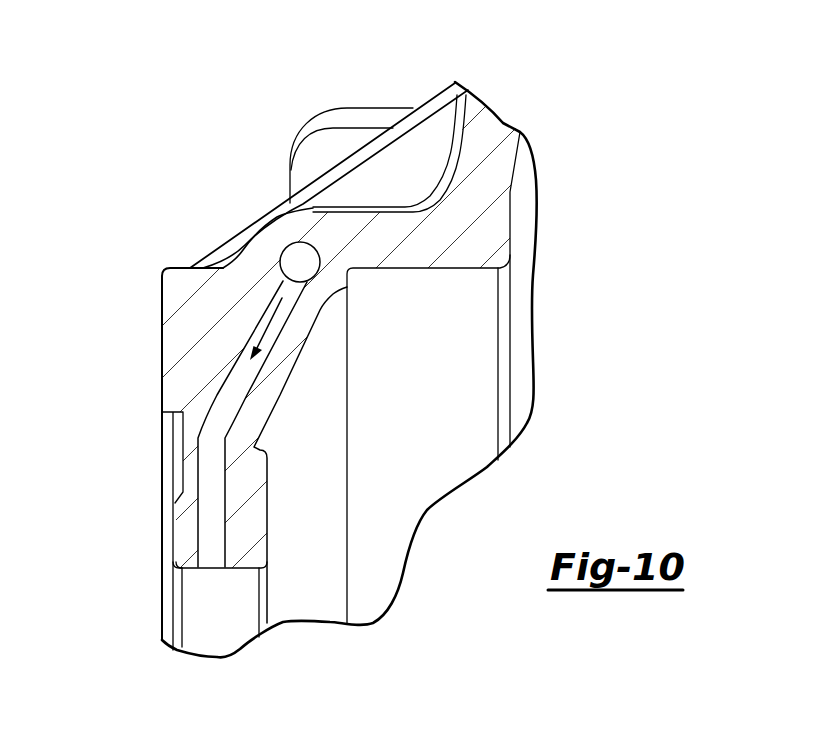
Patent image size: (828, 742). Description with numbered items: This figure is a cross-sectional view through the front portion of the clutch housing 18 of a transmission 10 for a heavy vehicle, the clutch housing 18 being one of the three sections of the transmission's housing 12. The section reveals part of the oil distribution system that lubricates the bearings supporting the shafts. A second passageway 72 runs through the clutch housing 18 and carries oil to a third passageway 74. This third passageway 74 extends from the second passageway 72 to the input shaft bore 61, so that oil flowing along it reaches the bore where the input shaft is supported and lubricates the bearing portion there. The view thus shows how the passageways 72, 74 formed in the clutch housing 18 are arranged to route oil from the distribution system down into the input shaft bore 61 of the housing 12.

The transmission 10 is at (532, 104).
The housing 12 is at (562, 140).
The clutch housing 18 is at (125, 434).
The input shaft bore 61 is at (243, 568).
The second passageway 72 is at (282, 250).
The third passageway 74 is at (227, 390).